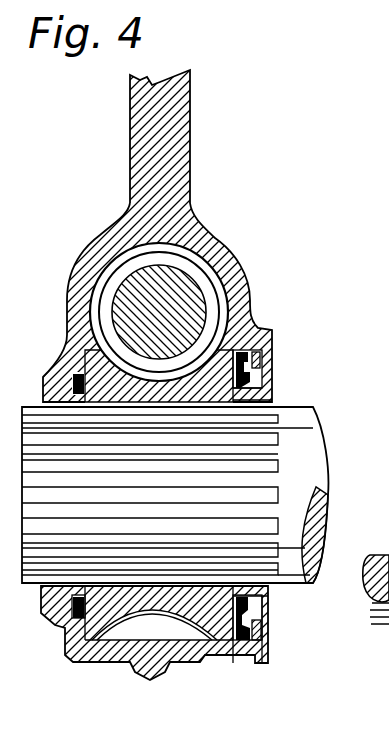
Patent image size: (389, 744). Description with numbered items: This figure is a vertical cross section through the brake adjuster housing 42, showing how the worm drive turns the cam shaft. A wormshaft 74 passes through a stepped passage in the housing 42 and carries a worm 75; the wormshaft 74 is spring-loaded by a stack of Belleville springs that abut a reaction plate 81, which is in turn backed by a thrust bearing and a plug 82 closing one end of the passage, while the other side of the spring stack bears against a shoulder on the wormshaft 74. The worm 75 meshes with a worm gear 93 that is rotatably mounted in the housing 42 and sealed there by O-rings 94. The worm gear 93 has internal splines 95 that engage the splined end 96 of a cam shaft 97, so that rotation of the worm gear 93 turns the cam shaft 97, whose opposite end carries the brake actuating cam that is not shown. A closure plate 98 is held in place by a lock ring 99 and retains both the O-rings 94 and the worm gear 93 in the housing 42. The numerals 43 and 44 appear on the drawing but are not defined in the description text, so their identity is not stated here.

The housing 42 is at (207, 645).
The rocker arm stem 43 is at (184, 104).
The seal 44 is at (373, 569).
The wormshaft 74 is at (180, 292).
The worm 75 is at (100, 300).
The reaction plate 81 is at (388, 140).
The plug 82 is at (388, 222).
The worm gear 93 is at (100, 376).
The O-rings 94 is at (66, 620).
The internal splines 95 is at (150, 568).
The splined end 96 is at (45, 472).
The cam shaft 97 is at (318, 422).
The closure plate 98 is at (245, 395).
The lock ring 99 is at (250, 355).